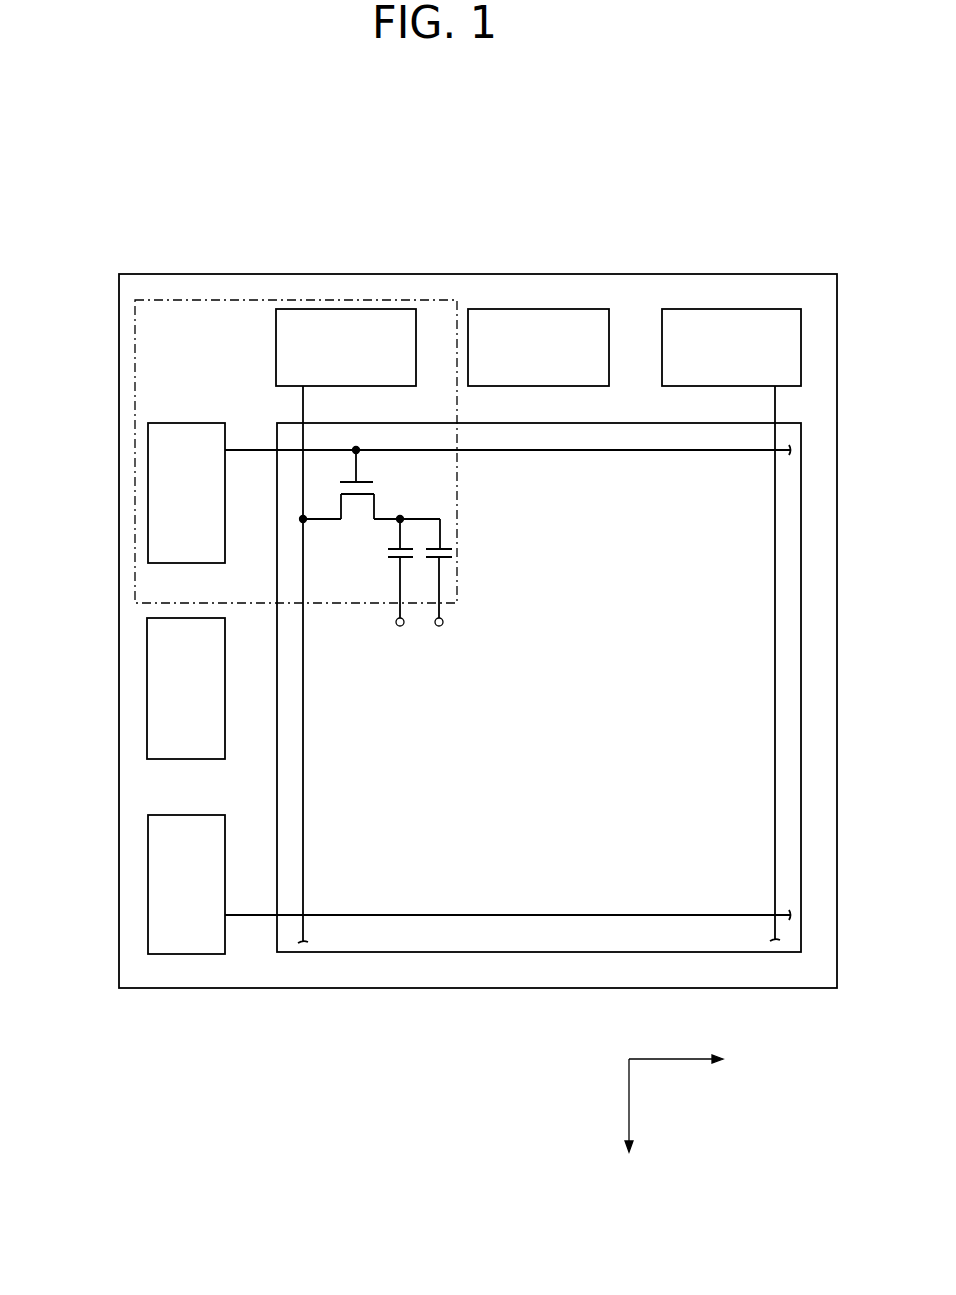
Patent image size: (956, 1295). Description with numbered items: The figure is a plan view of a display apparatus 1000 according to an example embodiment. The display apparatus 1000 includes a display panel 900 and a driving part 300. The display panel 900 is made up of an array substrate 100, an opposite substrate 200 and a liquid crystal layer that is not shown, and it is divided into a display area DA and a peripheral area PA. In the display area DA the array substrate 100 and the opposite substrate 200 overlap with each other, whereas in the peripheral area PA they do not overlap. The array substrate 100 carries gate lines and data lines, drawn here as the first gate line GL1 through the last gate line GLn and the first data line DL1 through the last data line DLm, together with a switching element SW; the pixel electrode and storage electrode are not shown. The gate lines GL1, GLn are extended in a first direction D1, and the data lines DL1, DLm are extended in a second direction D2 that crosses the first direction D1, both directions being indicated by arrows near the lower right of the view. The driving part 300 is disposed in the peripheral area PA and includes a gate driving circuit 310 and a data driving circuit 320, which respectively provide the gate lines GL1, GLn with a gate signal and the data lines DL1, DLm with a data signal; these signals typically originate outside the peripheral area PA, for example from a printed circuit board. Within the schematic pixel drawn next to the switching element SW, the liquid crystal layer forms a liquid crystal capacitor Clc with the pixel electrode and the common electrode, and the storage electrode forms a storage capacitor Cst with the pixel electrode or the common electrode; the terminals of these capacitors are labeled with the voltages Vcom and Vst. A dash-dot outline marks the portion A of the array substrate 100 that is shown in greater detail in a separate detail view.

The display apparatus 1000 is at (524, 133).
The display panel 900 is at (539, 605).
The array substrate 100 is at (342, 285).
The opposite substrate 200 is at (438, 435).
The driving part 300 is at (400, 631).
The gate driving circuit 310 is at (298, 360).
The data driving circuit 320 is at (137, 688).
The portion A is at (228, 300).
The peripheral area PA is at (128, 790).
The display area DA is at (503, 887).
The data line DL1 is at (321, 664).
The data line DLm is at (794, 663).
The gate line GL1 is at (508, 462).
The gate line GLn is at (508, 931).
The switching element SW is at (371, 483).
The liquid crystal capacitor Clc is at (380, 568).
The storage capacitor Cst is at (460, 568).
The common voltage Vcom is at (398, 637).
The storage voltage Vst is at (451, 637).
The first direction D1 is at (693, 1063).
The second direction D2 is at (629, 1121).